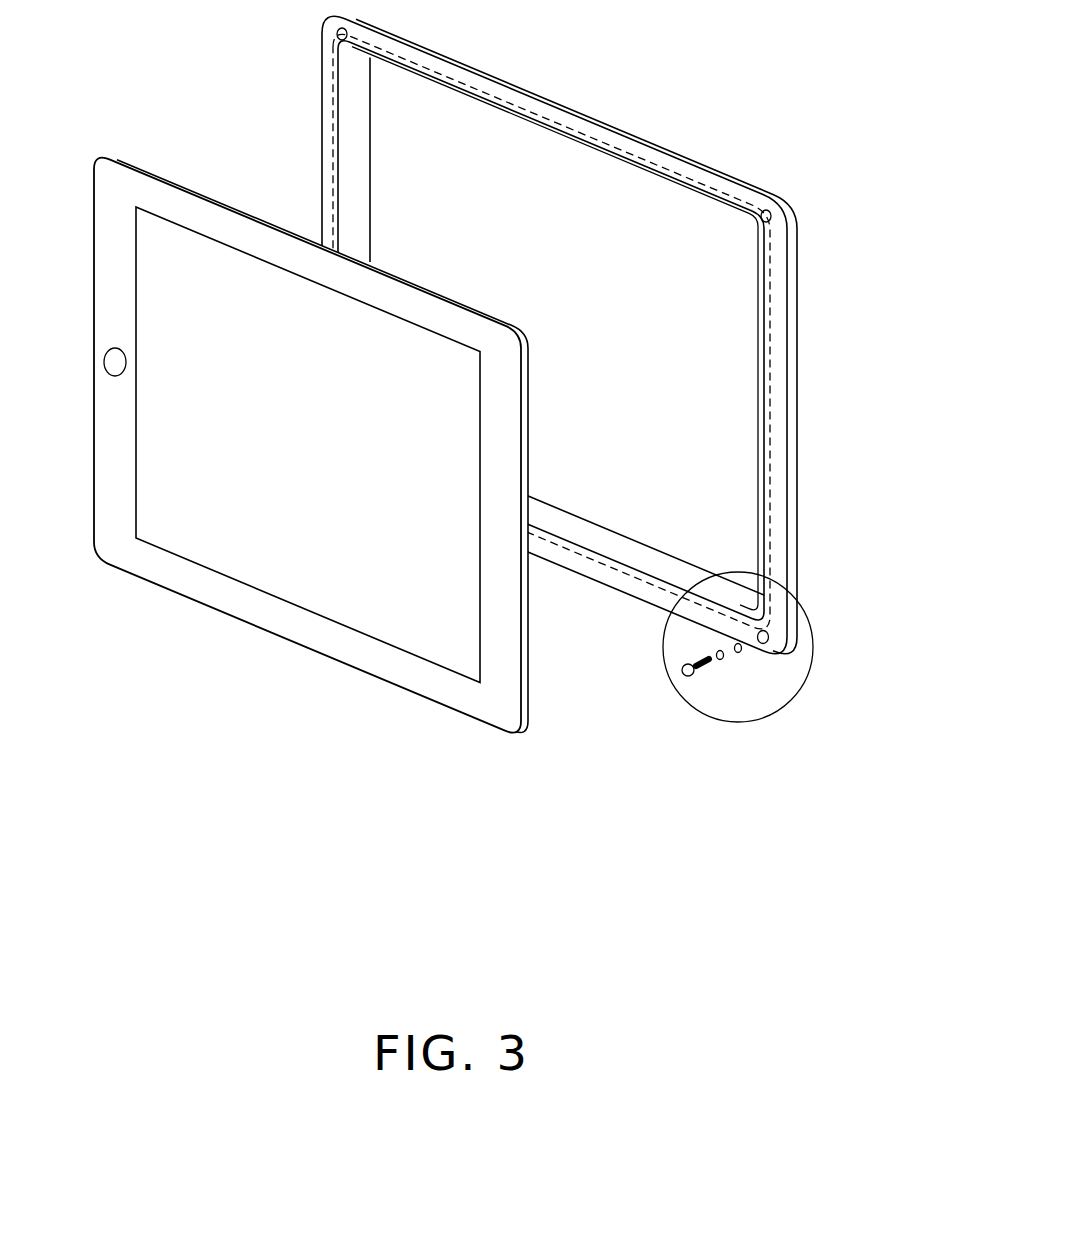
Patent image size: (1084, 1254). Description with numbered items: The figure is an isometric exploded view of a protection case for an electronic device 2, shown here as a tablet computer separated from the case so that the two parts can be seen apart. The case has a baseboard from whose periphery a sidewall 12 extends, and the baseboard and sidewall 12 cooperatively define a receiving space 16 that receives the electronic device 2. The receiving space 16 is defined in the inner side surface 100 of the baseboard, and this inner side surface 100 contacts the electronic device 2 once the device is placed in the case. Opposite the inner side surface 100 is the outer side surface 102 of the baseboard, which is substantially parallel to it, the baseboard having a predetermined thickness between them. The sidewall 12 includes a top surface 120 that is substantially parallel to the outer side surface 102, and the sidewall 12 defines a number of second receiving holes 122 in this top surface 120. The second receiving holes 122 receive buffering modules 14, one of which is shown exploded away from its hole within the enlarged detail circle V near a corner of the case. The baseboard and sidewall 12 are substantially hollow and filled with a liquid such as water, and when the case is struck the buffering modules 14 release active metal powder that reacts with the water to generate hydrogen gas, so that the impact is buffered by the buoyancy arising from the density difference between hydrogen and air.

The electronic device 2 is at (320, 585).
The sidewall 12 is at (556, 102).
The buffering modules 14 is at (715, 688).
The receiving space 16 is at (666, 212).
The inner side surface 100 is at (715, 237).
The outer side surface 102 is at (809, 212).
The top surface 120 is at (776, 466).
The second receiving holes 122 is at (770, 643).
The detail view circle V is at (767, 722).